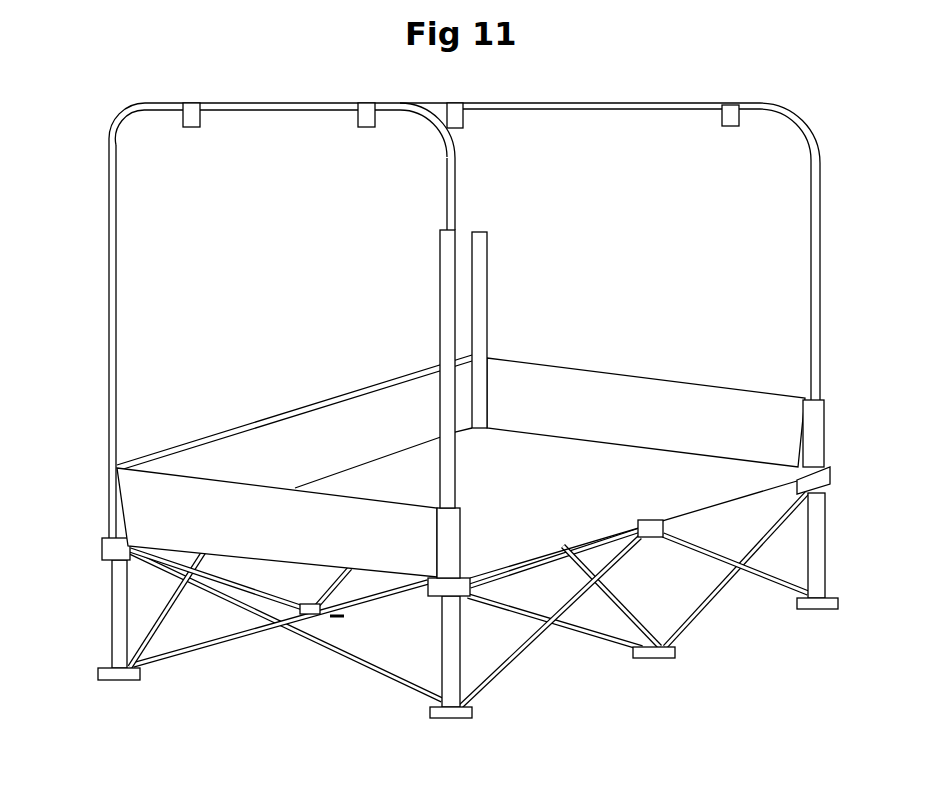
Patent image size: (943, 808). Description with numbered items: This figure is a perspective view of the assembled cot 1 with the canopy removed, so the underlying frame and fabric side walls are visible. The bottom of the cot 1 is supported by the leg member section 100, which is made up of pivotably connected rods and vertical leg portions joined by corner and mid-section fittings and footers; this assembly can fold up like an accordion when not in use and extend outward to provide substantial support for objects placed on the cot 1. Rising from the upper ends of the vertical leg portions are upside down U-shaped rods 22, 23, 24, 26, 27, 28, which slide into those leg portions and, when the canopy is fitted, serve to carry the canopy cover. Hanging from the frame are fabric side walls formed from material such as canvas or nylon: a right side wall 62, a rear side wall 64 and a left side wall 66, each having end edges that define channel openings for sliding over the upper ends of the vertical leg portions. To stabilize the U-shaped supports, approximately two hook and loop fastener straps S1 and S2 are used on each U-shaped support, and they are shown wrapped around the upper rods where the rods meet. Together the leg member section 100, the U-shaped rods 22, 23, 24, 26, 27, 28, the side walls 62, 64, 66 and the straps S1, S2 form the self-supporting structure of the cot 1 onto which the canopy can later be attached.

The cot 1 is at (76, 382).
The upside down U-shaped rod 22 is at (817, 277).
The upside down U-shaped rod 23 is at (627, 110).
The upside down U-shaped rod 24 is at (487, 287).
The upside down U-shaped rod 26 is at (441, 312).
The upside down U-shaped rod 27 is at (290, 102).
The upside down U-shaped rod 28 is at (117, 278).
The right side wall 62 is at (648, 407).
The rear side wall 64 is at (302, 440).
The left side wall 66 is at (143, 505).
The leg member section 100 is at (88, 603).
The hook and loop fastener strap S1 is at (190, 118).
The hook and loop fastener strap S2 is at (363, 118).